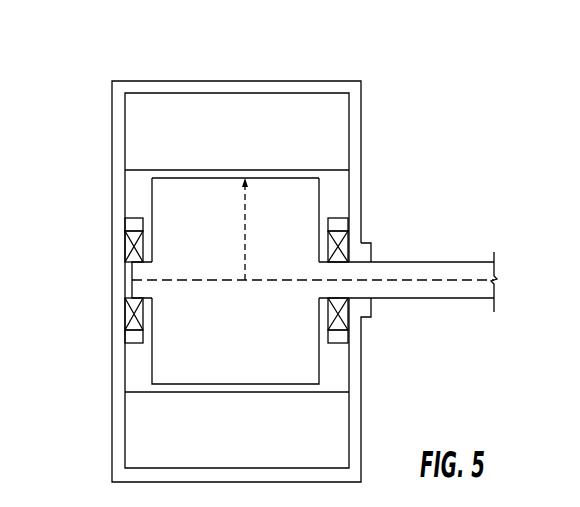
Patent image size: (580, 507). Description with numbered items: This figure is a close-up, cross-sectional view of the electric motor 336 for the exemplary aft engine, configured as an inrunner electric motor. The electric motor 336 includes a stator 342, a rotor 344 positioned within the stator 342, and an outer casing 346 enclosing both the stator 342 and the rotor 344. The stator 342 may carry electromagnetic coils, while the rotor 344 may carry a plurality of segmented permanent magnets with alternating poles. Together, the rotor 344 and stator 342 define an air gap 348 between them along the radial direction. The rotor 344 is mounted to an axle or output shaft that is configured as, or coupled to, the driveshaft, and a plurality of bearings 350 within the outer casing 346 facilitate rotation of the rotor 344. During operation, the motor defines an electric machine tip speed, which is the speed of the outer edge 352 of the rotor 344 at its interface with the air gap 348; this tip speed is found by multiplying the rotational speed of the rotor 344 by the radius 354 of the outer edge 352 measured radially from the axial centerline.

The electric motor 336 is at (440, 100).
The stator 342 is at (150, 137).
The rotor 344 is at (170, 200).
The outer casing 346 is at (308, 81).
The air gap 348 is at (188, 170).
The bearings 350 is at (124, 320).
The outer edge 352 is at (275, 172).
The radius 354 is at (248, 207).